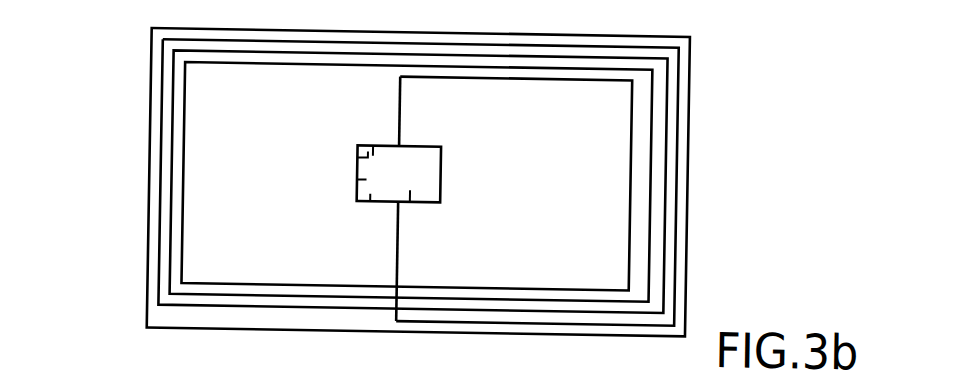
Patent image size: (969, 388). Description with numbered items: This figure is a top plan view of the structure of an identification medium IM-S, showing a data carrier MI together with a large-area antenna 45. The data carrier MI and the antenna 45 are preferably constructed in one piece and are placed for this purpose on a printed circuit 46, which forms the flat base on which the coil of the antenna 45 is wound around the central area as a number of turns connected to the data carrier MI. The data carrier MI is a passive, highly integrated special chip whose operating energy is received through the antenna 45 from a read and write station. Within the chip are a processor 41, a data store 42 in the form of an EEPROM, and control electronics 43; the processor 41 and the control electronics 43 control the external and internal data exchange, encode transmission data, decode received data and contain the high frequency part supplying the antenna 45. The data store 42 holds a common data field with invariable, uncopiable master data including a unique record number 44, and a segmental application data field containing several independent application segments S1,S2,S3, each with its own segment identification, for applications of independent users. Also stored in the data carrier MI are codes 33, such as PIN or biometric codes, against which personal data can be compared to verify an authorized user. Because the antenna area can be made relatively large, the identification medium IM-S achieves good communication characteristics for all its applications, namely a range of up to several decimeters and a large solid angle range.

The identification medium IM-S is at (151, 87).
The high frequency antenna 45 is at (669, 156).
The data carrier MI is at (424, 142).
The codes 33 is at (443, 169).
The processor 41 is at (375, 151).
The data store 42 is at (360, 154).
The control electronics 43 is at (360, 176).
The unique record number 44 is at (373, 198).
The application segments S1,S2,S3 is at (415, 198).
The printed circuit 46 is at (252, 257).